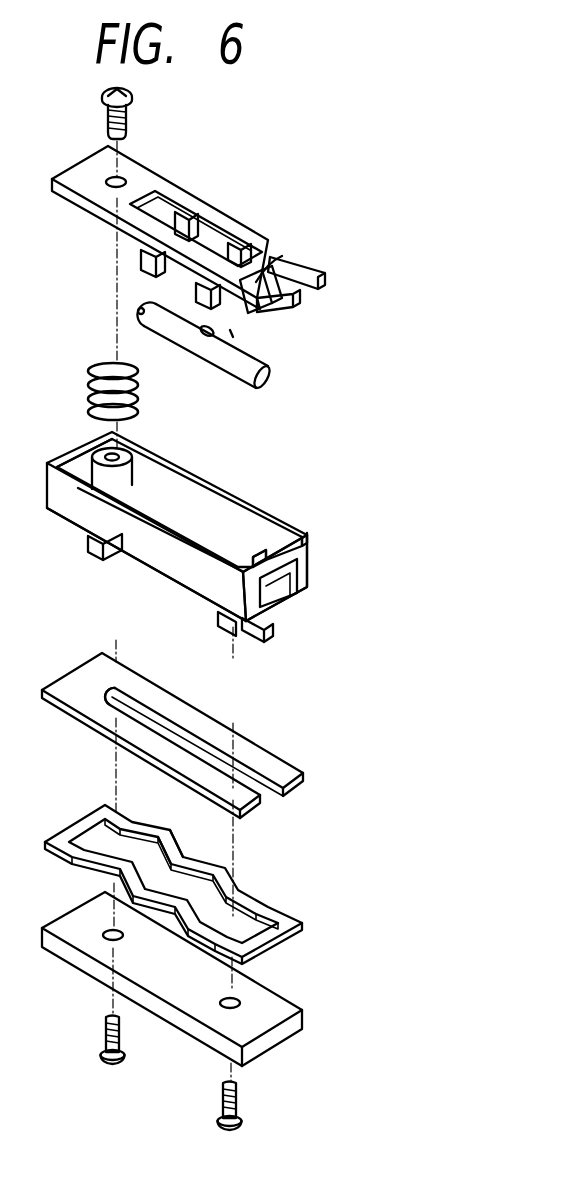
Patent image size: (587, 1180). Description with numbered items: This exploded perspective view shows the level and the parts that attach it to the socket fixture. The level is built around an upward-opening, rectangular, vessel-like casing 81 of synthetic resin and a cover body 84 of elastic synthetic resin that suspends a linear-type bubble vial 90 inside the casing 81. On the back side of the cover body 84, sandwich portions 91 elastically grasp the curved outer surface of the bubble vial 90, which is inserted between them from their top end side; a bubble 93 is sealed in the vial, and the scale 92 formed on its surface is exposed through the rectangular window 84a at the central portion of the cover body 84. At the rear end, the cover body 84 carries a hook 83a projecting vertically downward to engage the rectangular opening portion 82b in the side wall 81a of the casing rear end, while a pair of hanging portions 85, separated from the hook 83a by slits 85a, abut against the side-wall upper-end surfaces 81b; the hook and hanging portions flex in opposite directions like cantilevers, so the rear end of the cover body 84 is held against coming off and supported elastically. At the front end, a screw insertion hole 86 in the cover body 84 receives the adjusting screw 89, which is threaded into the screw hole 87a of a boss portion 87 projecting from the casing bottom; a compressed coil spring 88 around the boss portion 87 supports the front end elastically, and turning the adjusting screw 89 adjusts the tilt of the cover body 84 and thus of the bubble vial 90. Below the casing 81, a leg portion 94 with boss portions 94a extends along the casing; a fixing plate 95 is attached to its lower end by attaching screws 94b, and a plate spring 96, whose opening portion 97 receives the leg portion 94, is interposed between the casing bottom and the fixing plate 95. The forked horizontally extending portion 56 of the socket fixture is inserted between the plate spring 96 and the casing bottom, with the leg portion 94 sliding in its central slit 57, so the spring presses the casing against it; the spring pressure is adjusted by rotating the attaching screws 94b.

The horizontally extending portion 56 is at (107, 744).
The central slit 57 is at (217, 759).
The casing 81 is at (208, 488).
The side wall 81a is at (282, 558).
The side-wall upper-end surfaces 81b is at (250, 552).
The opening 82b is at (276, 590).
The hook 83a is at (292, 305).
The cover body 84 is at (226, 205).
The rectangular window 84a is at (203, 200).
The hanging portions 85 is at (316, 266).
The slits 85a is at (257, 282).
The screw insertion hole 86 is at (118, 181).
The boss portion 87 is at (75, 445).
The screw hole 87a is at (92, 450).
The compressed coil spring 88 is at (93, 362).
The adjusting screw 89 is at (106, 124).
The bubble vial 90 is at (270, 382).
The sandwich portions 91 is at (172, 206).
The scale 92 is at (233, 335).
The bubble 93 is at (210, 334).
The leg portion 94 is at (163, 580).
The boss portions 94a is at (103, 548).
The attaching screws 94b is at (102, 1043).
The fixing plate 95 is at (283, 1005).
The plate spring 96 is at (287, 918).
The opening portion 97 is at (233, 908).